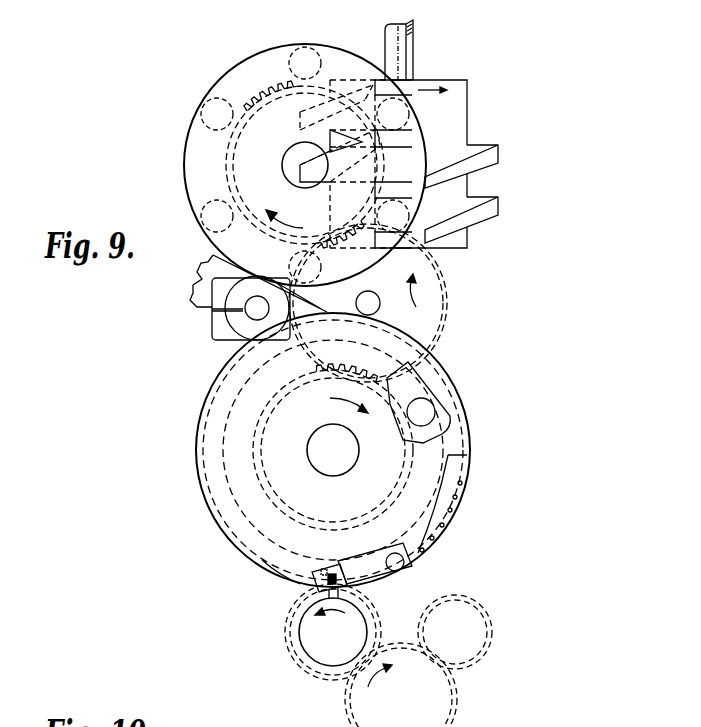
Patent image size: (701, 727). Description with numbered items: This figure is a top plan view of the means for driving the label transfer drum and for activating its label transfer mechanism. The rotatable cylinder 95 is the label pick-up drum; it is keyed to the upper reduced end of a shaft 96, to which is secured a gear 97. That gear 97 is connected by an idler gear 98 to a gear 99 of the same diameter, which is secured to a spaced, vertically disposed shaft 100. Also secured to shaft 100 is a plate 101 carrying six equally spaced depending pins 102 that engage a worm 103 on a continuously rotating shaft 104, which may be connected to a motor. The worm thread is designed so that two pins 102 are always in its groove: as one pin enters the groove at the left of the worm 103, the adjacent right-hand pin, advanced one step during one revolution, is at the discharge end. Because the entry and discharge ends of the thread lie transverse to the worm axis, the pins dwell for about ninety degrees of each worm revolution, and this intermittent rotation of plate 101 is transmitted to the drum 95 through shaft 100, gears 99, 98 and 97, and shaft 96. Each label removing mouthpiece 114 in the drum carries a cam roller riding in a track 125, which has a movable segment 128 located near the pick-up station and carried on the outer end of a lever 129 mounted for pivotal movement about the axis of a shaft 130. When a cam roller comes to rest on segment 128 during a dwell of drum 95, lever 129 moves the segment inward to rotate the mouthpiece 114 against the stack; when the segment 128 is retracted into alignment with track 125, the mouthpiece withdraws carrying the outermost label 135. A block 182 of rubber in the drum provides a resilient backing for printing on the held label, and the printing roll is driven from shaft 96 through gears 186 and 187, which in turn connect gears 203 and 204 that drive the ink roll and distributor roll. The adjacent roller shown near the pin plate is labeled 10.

The roller 10 is at (203, 111).
The rotatable cylinder 95 is at (472, 441).
The shaft 96 is at (351, 448).
The gear 97 is at (262, 475).
The idler gear 98 is at (444, 297).
The gear 99 is at (231, 161).
The shaft 100 is at (291, 157).
The plate 101 is at (357, 31).
The depending pins 102 is at (204, 221).
The worm 103 is at (460, 107).
The continuously rotating shaft 104 is at (410, 40).
The mouthpiece 114 is at (353, 566).
The track 125 is at (270, 535).
The movable segment 128 is at (421, 392).
The lever 129 is at (428, 372).
The shaft 130 is at (251, 314).
The label 135 is at (437, 541).
The block of rubber 182 is at (330, 573).
The gear 186 is at (274, 574).
The gear 187 is at (292, 650).
The gear 203 is at (388, 685).
The gear 204 is at (492, 630).